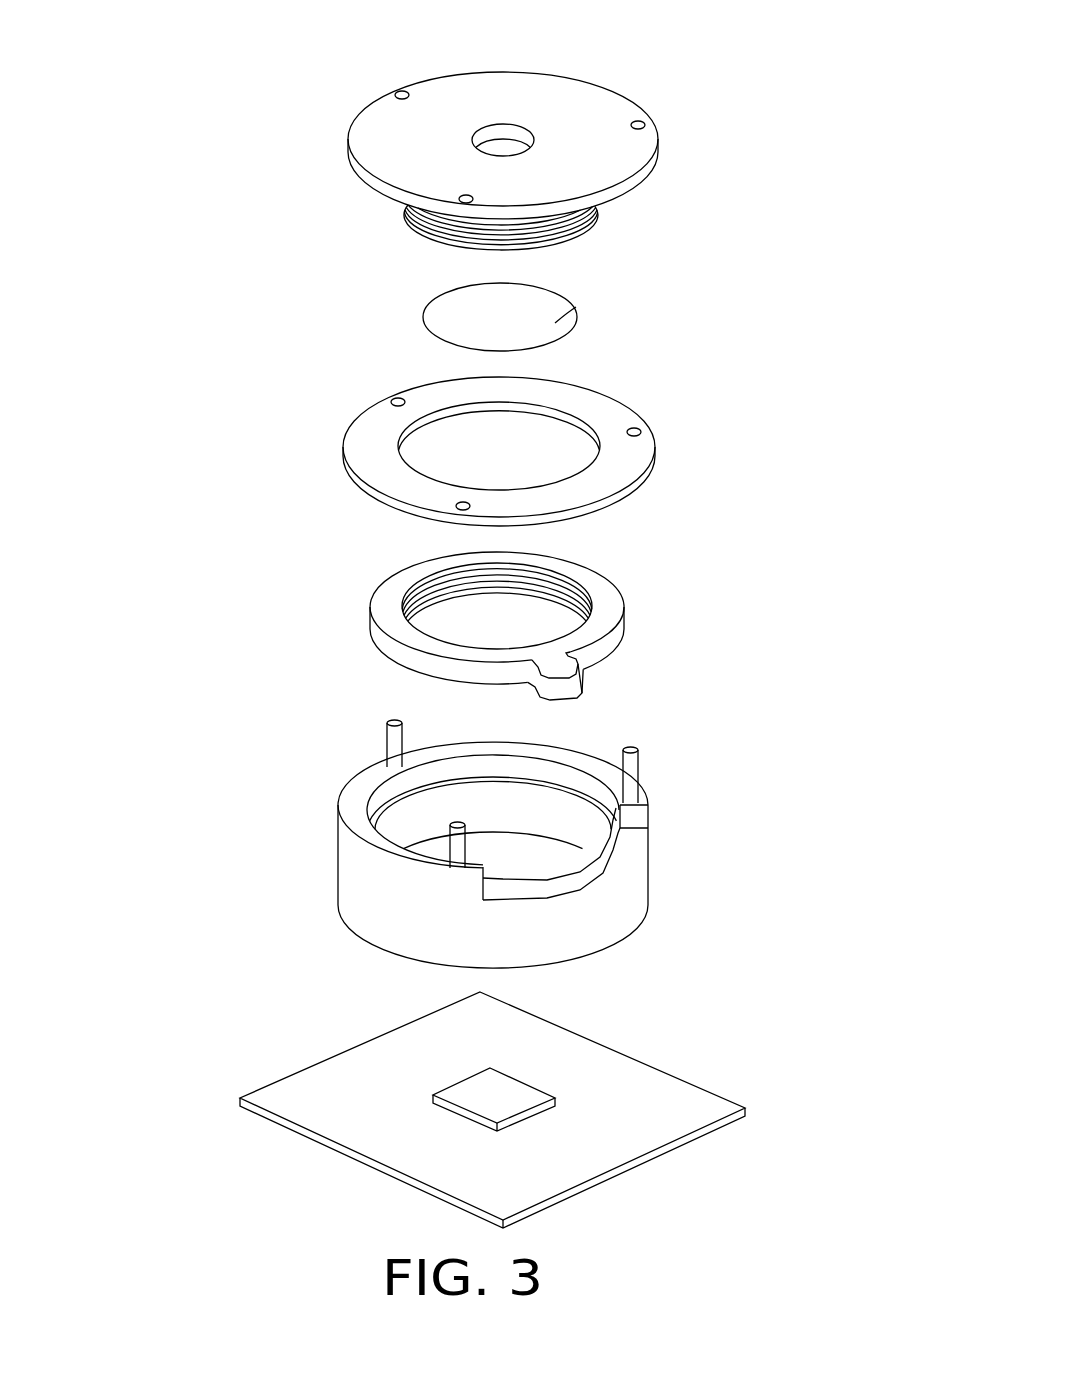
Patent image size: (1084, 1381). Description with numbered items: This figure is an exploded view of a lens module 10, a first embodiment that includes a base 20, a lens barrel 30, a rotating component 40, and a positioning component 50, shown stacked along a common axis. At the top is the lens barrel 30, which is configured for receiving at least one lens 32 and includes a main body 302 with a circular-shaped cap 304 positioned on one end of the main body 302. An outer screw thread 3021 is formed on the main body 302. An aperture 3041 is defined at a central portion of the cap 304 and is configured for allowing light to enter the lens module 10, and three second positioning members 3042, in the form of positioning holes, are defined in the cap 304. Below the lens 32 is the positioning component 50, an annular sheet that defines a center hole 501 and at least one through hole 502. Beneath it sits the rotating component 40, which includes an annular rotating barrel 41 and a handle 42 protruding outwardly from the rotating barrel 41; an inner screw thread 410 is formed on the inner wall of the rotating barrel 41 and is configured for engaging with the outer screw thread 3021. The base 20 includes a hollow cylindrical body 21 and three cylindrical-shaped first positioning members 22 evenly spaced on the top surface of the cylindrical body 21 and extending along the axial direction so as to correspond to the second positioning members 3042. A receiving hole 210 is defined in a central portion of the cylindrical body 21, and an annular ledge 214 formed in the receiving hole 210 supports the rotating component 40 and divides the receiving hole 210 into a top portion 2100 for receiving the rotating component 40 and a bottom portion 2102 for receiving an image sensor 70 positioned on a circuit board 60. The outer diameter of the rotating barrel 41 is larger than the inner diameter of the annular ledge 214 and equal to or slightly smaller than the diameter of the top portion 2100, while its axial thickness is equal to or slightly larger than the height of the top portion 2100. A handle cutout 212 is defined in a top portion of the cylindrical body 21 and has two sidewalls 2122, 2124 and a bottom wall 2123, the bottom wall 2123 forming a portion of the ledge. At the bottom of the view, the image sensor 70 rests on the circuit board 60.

The lens module 10 is at (525, 30).
The lens barrel 30 is at (342, 118).
The cap 304 is at (640, 178).
The aperture 3041 is at (507, 150).
The second positioning member 3042 is at (641, 124).
The main body 302 is at (433, 232).
The outer screw thread 3021 is at (560, 242).
The lens 32 is at (576, 307).
The positioning component 50 is at (327, 432).
The center hole 501 is at (553, 440).
The through hole 502 is at (397, 398).
The rotating component 40 is at (368, 590).
The rotating barrel 41 is at (600, 617).
The inner screw thread 410 is at (560, 587).
The handle 42 is at (565, 687).
The base 20 is at (323, 878).
The cylindrical body 21 is at (378, 893).
The annular ledge 214 is at (557, 790).
The receiving hole 210 is at (228, 732).
The top portion 2100 is at (397, 782).
The bottom portion 2102 is at (420, 838).
The handle cutout 212 is at (785, 780).
The sidewall 2122 is at (632, 815).
The bottom wall 2123 is at (612, 862).
The sidewall 2124 is at (487, 883).
The first positioning member 22 is at (392, 722).
The circuit board 60 is at (665, 1110).
The image sensor 70 is at (513, 1093).